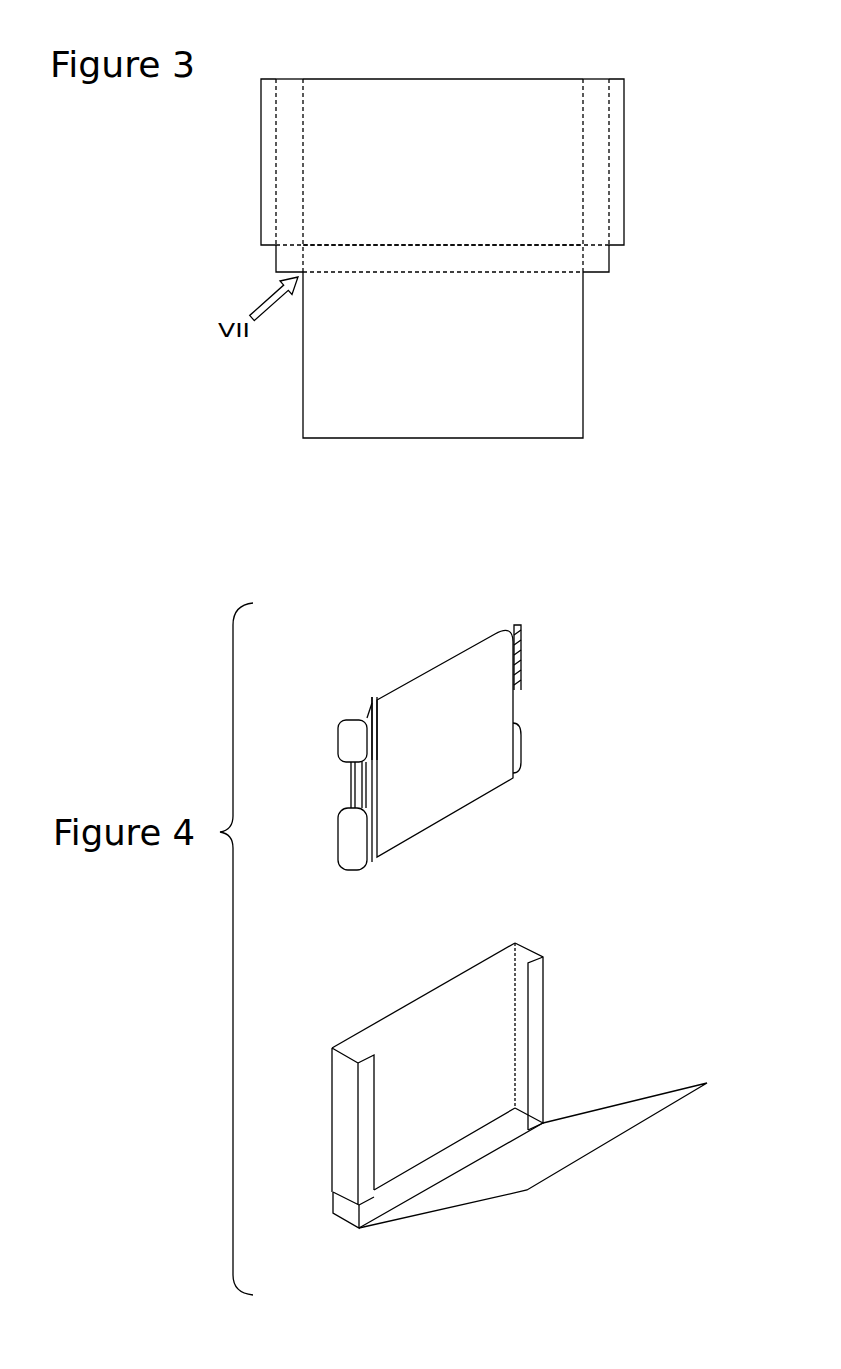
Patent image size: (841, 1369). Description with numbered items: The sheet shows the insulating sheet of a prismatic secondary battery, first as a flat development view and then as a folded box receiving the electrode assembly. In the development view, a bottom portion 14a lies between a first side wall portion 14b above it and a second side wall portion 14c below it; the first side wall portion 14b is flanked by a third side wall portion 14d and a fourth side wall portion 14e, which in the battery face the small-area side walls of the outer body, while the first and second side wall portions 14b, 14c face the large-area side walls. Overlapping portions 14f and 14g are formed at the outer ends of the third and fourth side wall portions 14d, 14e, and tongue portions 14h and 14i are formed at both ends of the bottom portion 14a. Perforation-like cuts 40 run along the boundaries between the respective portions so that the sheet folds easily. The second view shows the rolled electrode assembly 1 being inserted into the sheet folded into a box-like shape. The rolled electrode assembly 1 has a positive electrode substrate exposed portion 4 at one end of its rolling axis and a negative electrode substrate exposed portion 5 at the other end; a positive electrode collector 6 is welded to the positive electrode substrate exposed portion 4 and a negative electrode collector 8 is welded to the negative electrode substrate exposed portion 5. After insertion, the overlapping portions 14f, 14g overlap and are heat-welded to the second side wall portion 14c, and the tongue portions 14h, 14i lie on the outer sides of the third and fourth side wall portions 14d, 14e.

In FIG. 4, the rolled electrode assembly 1 is at (462, 778).
In FIG. 4, the positive electrode substrate exposed portion 4 is at (353, 836).
In FIG. 4, the negative electrode substrate exposed portion 5 is at (522, 740).
In FIG. 4, the positive electrode collector 6 is at (370, 709).
In FIG. 4, the negative electrode collector 8 is at (522, 651).
In FIG. 3, the bottom portion 14a is at (540, 257).
In FIG. 4, the bottom portion 14a is at (398, 1192).
In FIG. 3, the first side wall portion 14b is at (487, 118).
In FIG. 4, the first side wall portion 14b is at (452, 1008).
In FIG. 3, the second side wall portion 14c is at (555, 368).
In FIG. 4, the second side wall portion 14c is at (622, 1115).
In FIG. 3, the third side wall portion 14d is at (292, 125).
In FIG. 4, the third side wall portion 14d is at (348, 1150).
In FIG. 3, the fourth side wall portion 14e is at (595, 97).
In FIG. 4, the fourth side wall portion 14e is at (537, 955).
In FIG. 3, the overlapping portion 14f is at (270, 178).
In FIG. 4, the overlapping portion 14f is at (367, 1207).
In FIG. 3, the overlapping portion 14g is at (613, 195).
In FIG. 4, the overlapping portion 14g is at (533, 1003).
In FIG. 3, the tongue portion 14h is at (292, 255).
In FIG. 4, the tongue portion 14h is at (348, 1208).
In FIG. 3, the tongue portion 14i is at (593, 253).
In FIG. 3, the perforation-like cuts 40 is at (368, 245).